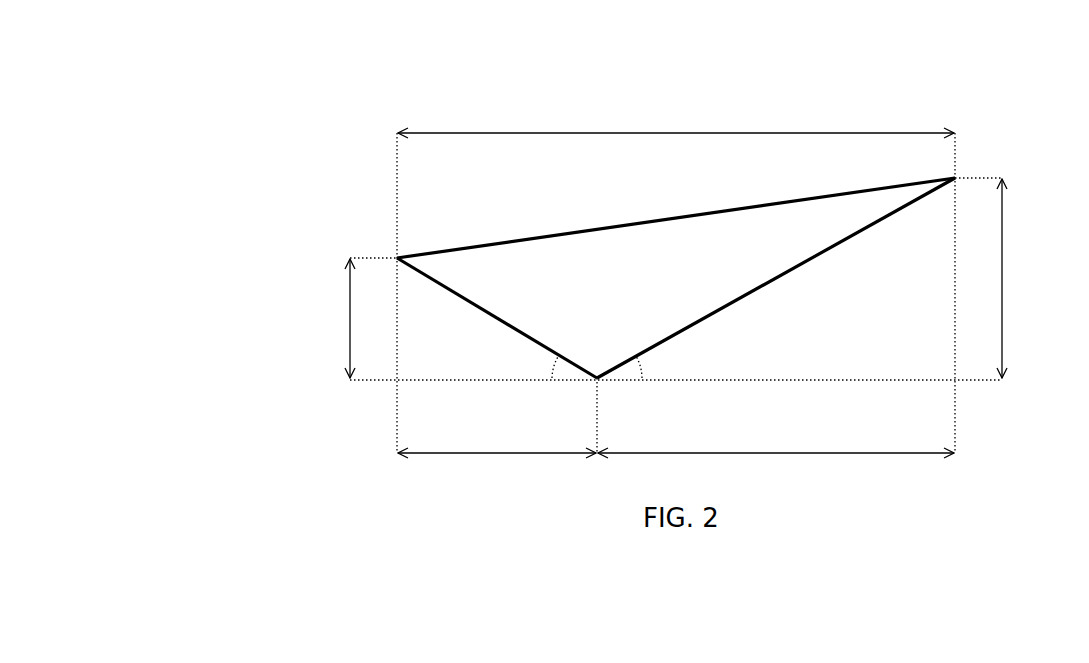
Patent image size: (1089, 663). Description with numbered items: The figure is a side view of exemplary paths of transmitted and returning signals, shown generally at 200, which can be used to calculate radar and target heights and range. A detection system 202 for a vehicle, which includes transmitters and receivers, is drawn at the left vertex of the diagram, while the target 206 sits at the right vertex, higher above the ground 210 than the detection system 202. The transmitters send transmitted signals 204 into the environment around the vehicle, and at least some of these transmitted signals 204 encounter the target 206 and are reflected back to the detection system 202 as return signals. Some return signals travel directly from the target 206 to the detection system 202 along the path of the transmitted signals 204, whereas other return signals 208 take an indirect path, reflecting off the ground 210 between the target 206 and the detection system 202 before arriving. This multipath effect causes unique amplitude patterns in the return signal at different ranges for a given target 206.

The exemplary paths of transmitted and returning signals 200 is at (289, 124).
The detection system 202 is at (396, 258).
The transmitted signals 204 is at (571, 222).
The target 206 is at (957, 178).
The return signals taking indirect paths 208 is at (903, 207).
The ground 210 is at (478, 382).